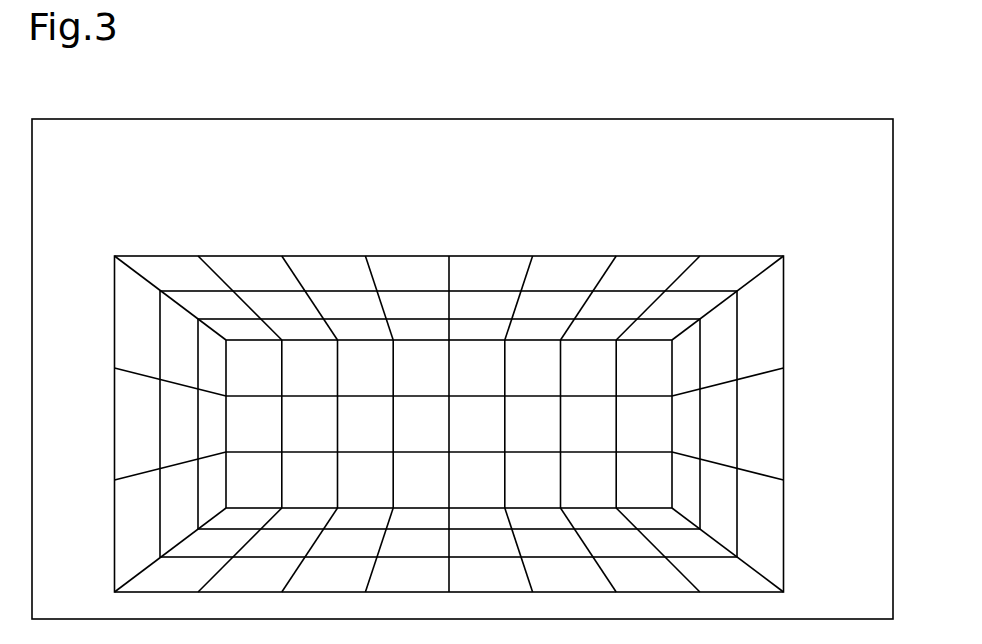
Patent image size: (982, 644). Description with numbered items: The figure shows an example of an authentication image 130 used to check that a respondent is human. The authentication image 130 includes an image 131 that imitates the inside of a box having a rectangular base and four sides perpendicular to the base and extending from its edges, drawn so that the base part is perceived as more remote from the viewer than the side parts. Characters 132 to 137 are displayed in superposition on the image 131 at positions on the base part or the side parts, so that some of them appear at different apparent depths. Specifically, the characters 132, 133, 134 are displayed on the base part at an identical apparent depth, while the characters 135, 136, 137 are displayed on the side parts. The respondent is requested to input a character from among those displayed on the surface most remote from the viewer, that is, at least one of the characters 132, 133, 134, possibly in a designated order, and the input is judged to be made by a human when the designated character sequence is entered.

The authentication image 130 is at (738, 119).
The image 131 is at (783, 292).
The character 132 is at (310, 410).
The character 133 is at (421, 410).
The character 134 is at (586, 410).
The character 135 is at (130, 411).
The character 136 is at (734, 308).
The character 137 is at (767, 510).